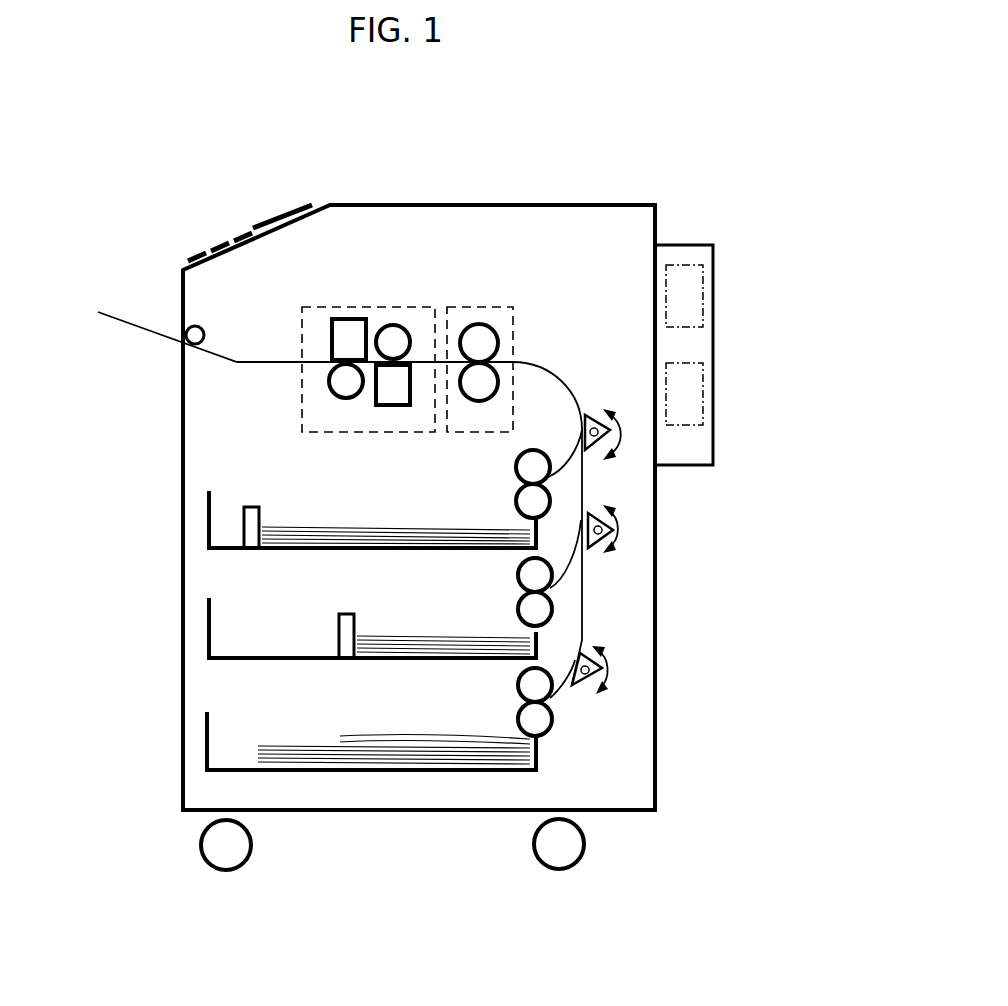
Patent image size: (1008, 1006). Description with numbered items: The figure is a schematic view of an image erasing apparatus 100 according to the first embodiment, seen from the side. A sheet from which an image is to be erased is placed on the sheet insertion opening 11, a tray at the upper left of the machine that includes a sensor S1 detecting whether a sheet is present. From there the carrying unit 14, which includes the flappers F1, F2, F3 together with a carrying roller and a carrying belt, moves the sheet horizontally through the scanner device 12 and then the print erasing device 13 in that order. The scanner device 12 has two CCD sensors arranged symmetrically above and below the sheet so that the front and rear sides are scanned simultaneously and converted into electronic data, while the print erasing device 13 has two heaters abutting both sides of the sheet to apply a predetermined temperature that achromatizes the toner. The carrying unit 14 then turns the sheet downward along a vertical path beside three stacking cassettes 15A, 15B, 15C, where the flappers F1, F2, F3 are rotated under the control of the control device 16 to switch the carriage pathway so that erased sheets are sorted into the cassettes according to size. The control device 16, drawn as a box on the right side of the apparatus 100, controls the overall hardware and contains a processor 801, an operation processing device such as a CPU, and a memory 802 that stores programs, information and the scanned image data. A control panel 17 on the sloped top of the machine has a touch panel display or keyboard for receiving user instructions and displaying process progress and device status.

The image erasing apparatus 100 is at (509, 160).
The control panel 17 is at (240, 232).
The sheet insertion opening 11 is at (137, 328).
The sensor S1 is at (195, 343).
The scanner device 12 is at (327, 307).
The print erasing device 13 is at (483, 308).
The carrying unit 14 is at (550, 362).
The flapper F1 is at (587, 407).
The flapper F2 is at (598, 535).
The flapper F3 is at (586, 678).
The stacking cassette 15A is at (209, 518).
The stacking cassette 15B is at (209, 625).
The stacking cassette 15C is at (207, 742).
The control device 16 is at (702, 245).
The processor 801 is at (702, 290).
The memory 802 is at (702, 388).